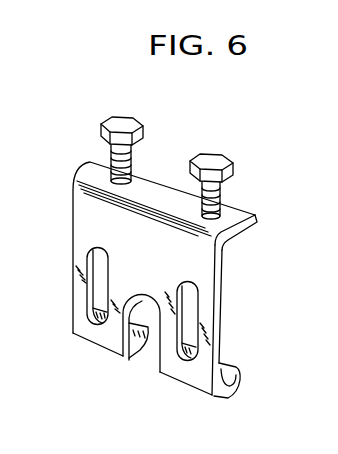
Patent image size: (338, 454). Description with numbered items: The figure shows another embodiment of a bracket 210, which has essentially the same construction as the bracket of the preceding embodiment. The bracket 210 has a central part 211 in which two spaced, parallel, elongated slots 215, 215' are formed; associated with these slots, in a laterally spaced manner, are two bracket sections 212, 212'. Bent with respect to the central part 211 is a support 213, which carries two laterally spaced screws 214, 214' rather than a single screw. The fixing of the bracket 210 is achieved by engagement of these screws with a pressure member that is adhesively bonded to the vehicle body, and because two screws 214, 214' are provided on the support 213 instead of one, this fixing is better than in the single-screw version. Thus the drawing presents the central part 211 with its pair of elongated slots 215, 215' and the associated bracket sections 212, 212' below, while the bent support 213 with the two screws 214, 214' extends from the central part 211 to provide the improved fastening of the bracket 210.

The bracket 210 is at (250, 300).
The central part 211 is at (110, 238).
The bracket section 212 is at (140, 353).
The bracket section 212' is at (243, 400).
The support 213 is at (232, 210).
The screw 214 is at (98, 135).
The screw 214' is at (232, 172).
The elongated slot 215 is at (60, 286).
The elongated slot 215' is at (223, 321).